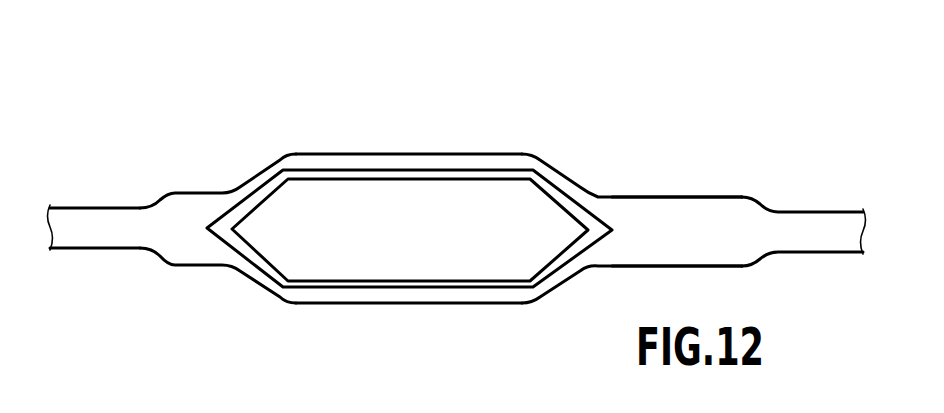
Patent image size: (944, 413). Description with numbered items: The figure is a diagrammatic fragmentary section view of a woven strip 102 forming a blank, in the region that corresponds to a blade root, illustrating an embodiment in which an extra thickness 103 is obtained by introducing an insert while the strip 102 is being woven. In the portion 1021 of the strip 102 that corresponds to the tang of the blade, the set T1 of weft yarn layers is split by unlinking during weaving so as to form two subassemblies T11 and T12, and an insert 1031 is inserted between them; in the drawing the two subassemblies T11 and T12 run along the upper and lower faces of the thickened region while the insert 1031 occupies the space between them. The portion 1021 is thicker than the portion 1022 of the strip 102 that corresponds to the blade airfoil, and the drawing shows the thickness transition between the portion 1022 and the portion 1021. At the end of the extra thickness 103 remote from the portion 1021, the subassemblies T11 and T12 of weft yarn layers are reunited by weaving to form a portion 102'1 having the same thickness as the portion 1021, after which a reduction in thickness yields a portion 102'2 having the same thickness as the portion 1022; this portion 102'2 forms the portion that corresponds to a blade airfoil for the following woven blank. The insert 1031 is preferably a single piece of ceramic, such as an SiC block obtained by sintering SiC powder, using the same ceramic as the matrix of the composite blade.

The strip 102 is at (457, 233).
The portion 102'1 is at (218, 239).
The portion 102'2 is at (95, 253).
The portion 1021 is at (723, 237).
The portion 1022 is at (810, 227).
The extra thickness 103 is at (365, 150).
The insert 1031 is at (358, 245).
The set of weft yarn layers T1 is at (678, 250).
The subassembly of weft yarn layers T11 is at (473, 160).
The subassembly of weft yarn layers T12 is at (468, 295).